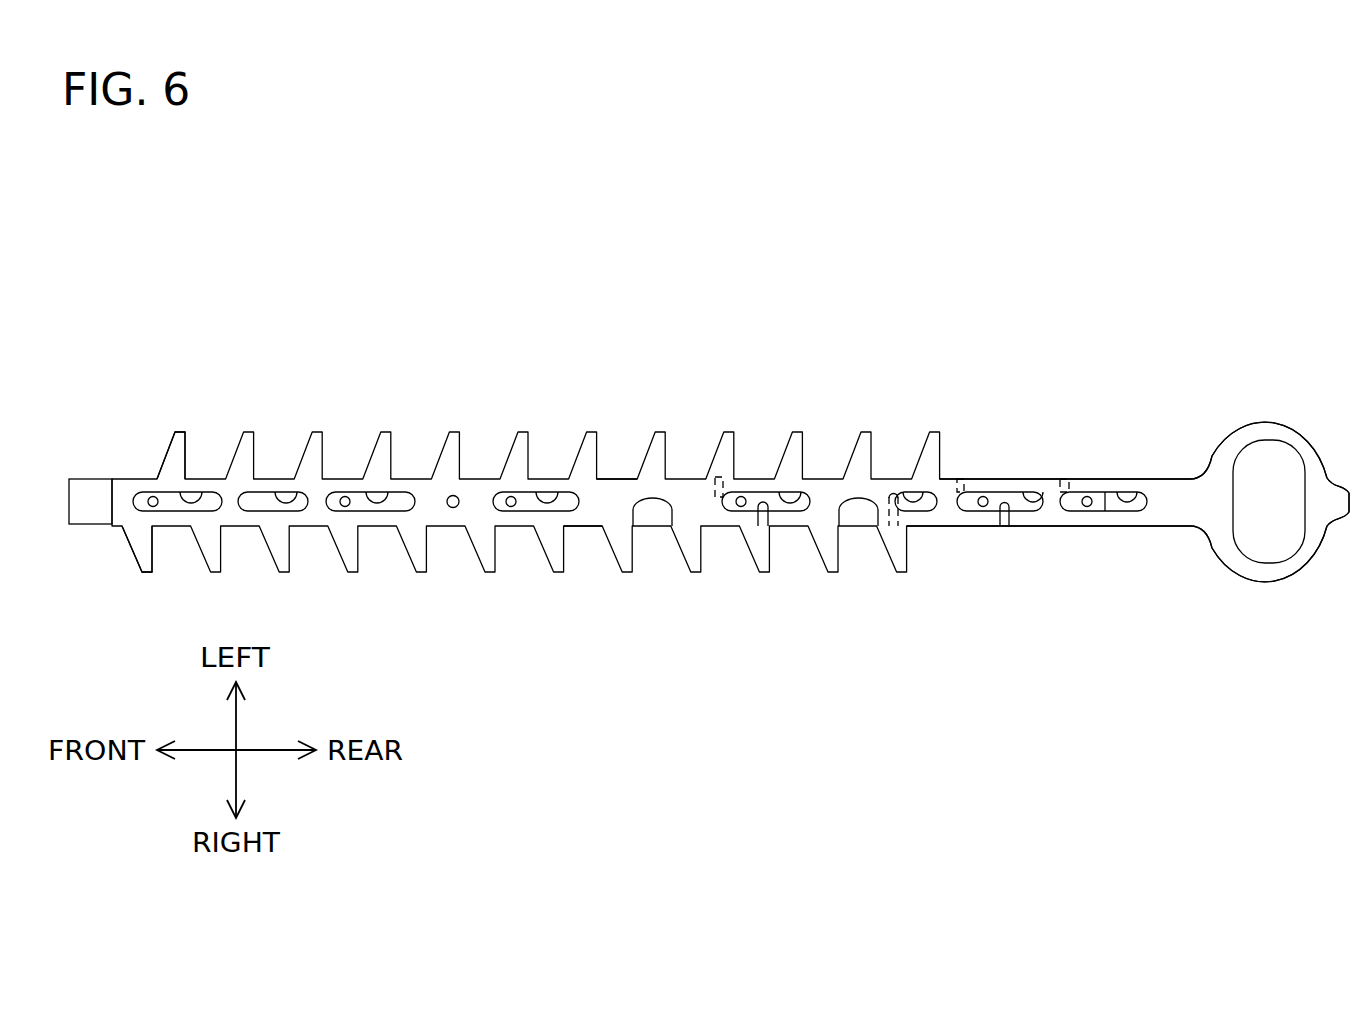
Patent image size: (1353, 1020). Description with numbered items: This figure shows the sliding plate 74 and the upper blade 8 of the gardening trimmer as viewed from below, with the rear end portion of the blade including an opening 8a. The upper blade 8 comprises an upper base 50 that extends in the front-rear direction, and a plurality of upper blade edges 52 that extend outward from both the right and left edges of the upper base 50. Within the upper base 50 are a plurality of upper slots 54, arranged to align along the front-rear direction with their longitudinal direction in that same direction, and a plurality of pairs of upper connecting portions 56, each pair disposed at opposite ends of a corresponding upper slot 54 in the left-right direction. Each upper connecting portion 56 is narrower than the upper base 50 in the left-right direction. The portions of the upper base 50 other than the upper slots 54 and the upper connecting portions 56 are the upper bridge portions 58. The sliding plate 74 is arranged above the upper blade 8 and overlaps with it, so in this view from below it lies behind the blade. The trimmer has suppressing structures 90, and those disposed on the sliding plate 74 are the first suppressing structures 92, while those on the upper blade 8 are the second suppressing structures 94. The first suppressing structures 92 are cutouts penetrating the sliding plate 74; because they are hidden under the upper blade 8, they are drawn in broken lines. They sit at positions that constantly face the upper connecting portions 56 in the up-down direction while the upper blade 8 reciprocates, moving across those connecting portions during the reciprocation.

The upper blade 8 is at (1172, 484).
The opening 8a is at (1305, 493).
The upper base 50 is at (1170, 520).
The upper blade edges 52 is at (173, 458).
The upper slots 54 is at (181, 492).
The upper connecting portions 56 is at (762, 490).
The upper bridge portions 58 is at (610, 500).
The sliding plate 74 is at (88, 488).
The suppressing structures 90 is at (1078, 543).
The first suppressing structures 92 is at (716, 478).
The second suppressing structures 94 is at (657, 500).